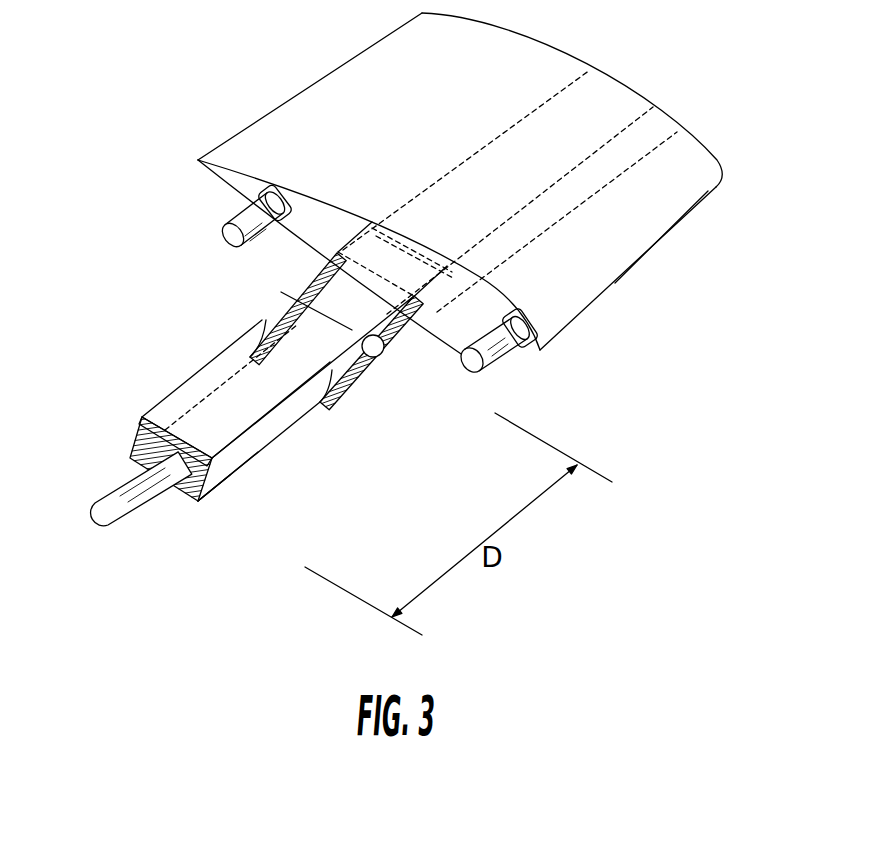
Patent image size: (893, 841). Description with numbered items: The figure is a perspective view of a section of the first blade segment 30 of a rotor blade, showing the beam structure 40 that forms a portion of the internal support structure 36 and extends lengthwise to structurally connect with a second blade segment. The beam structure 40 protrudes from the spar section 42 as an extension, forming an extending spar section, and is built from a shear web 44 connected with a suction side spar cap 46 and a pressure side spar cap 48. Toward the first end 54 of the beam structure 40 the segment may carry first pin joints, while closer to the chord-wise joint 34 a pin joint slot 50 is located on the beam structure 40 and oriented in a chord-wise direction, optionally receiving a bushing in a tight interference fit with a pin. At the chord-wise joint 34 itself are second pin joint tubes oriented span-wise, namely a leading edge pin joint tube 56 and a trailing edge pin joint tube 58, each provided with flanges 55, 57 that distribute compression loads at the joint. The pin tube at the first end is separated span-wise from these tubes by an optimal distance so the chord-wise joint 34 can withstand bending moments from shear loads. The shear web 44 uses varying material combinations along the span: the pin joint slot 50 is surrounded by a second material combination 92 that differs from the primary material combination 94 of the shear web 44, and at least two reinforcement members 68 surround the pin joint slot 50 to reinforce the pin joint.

The first blade segment 30 is at (303, 100).
The chord-wise joint 34 is at (222, 195).
The internal support structure 36 is at (307, 440).
The beam structure 40 is at (173, 400).
The spar section 42 is at (607, 92).
The shear web 44 is at (302, 400).
The suction side spar cap 46 is at (127, 457).
The pressure side spar cap 48 is at (413, 243).
The pin joint slot 50 is at (376, 350).
The first end 54 is at (218, 500).
The flange 55 is at (140, 504).
The leading edge pin joint tube 56 is at (480, 372).
The flange 57 is at (280, 195).
The trailing edge pin joint tube 58 is at (235, 245).
The reinforcement member 68 is at (303, 277).
The second material combination 92 is at (264, 322).
The primary material combination 94 is at (258, 440).